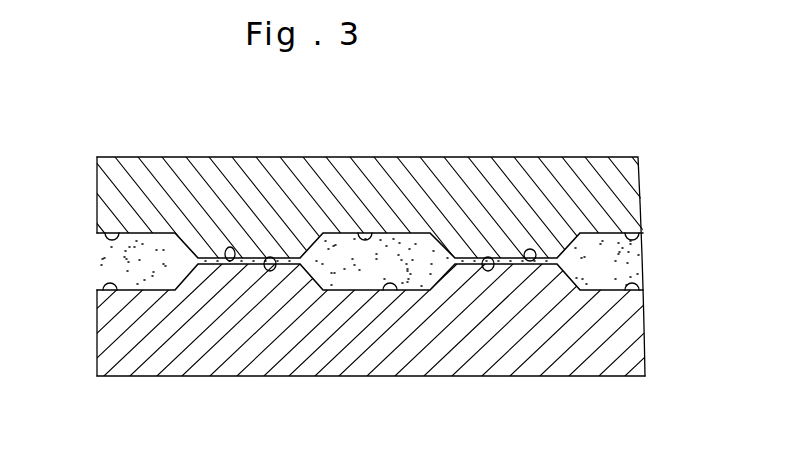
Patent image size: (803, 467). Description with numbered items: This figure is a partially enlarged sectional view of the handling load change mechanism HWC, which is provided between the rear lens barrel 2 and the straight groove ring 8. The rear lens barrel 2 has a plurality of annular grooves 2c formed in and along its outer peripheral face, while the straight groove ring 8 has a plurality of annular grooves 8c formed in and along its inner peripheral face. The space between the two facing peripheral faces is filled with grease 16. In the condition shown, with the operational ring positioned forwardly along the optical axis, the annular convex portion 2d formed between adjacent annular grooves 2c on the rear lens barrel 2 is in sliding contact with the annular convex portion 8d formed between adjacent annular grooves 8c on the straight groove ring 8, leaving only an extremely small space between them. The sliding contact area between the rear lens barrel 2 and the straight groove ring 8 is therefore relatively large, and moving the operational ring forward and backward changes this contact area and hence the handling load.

The straight groove ring 8 is at (478, 178).
The rear lens barrel 2 is at (469, 370).
The grease 16 is at (118, 266).
The annular grooves 8c is at (108, 235).
The annular grooves 2c is at (100, 288).
The annular convex portion 8d is at (272, 258).
The annular convex portion 2d is at (228, 262).
The handling load change mechanism HWC is at (85, 348).